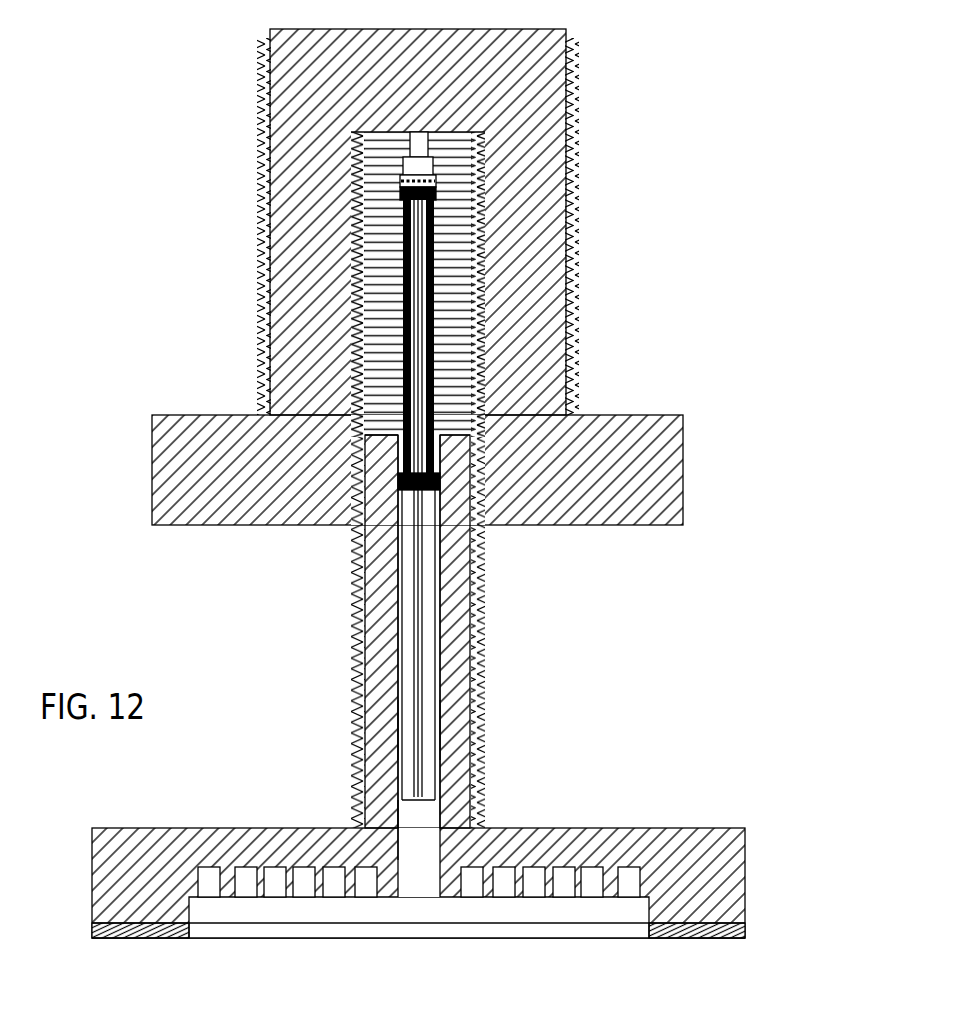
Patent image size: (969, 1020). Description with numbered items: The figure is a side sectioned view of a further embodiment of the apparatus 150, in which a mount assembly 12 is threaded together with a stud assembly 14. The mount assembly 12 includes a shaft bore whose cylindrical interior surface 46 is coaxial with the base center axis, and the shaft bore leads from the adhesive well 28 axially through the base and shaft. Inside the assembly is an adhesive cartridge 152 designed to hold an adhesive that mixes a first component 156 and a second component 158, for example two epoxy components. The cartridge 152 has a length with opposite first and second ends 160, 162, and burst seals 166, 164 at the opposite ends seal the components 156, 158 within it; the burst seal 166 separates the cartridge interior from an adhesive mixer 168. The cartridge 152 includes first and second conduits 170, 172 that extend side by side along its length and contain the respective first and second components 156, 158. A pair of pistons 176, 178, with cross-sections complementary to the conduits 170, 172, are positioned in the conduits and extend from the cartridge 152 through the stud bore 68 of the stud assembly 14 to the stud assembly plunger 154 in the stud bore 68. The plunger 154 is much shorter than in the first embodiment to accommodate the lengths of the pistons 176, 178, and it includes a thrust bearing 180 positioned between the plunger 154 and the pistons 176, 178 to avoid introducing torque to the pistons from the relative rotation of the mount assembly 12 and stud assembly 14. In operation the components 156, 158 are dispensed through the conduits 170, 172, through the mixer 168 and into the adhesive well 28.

The mount assembly 12 is at (754, 810).
The stud assembly 14 is at (622, 29).
The adhesive well 28 is at (298, 930).
The cylindrical interior surface 46 is at (397, 657).
The stud bore 68 is at (382, 232).
The apparatus 150 is at (702, 556).
The adhesive cartridge 152 is at (436, 667).
The stud assembly plunger 154 is at (410, 143).
The first adhesive component 156 is at (407, 712).
The second adhesive component 158 is at (430, 710).
The first end of cartridge 160 is at (347, 497).
The second end of cartridge 162 is at (432, 801).
The burst seal 164 is at (440, 492).
The burst seal 166 is at (405, 800).
The adhesive mixer 168 is at (410, 840).
The first conduit 170 is at (408, 606).
The second conduit 172 is at (428, 606).
The piston 176 is at (398, 473).
The piston 178 is at (442, 476).
The thrust bearing 180 is at (400, 180).